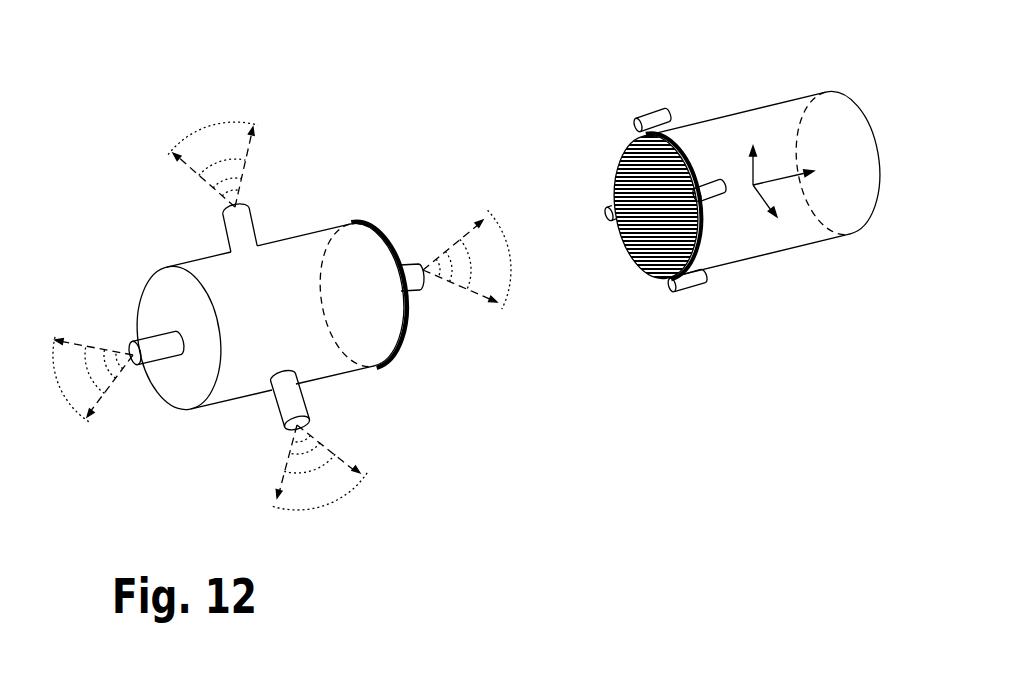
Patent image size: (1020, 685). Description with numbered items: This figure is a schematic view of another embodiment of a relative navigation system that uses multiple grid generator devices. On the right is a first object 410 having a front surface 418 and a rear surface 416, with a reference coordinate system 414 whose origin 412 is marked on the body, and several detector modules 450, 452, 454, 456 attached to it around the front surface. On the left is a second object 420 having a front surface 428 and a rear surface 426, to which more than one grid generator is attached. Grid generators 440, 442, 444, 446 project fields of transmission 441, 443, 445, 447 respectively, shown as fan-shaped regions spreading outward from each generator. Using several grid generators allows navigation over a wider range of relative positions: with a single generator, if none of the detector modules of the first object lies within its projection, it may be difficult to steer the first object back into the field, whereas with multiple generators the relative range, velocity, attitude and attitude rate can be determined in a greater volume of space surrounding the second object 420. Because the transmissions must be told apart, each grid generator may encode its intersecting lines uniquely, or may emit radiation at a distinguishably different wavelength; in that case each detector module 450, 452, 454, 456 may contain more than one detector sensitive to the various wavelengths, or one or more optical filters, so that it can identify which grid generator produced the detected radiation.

The first object 410 is at (730, 168).
The origin 412 is at (741, 193).
The reference coordinate system 414 is at (732, 150).
The rear surface 416 is at (870, 210).
The front surface 418 is at (620, 175).
The second object 420 is at (271, 296).
The rear surface 426 is at (157, 322).
The front surface 428 is at (403, 317).
The grid generator 440 is at (399, 256).
The field of transmission 441 is at (475, 270).
The grid generator 442 is at (269, 412).
The field of transmission 443 is at (306, 495).
The grid generator 444 is at (264, 222).
The field of transmission 445 is at (206, 152).
The grid generator 446 is at (168, 368).
The field of transmission 447 is at (58, 390).
The detector module 450 is at (655, 112).
The detector module 452 is at (604, 207).
The detector module 454 is at (710, 182).
The detector module 456 is at (686, 293).